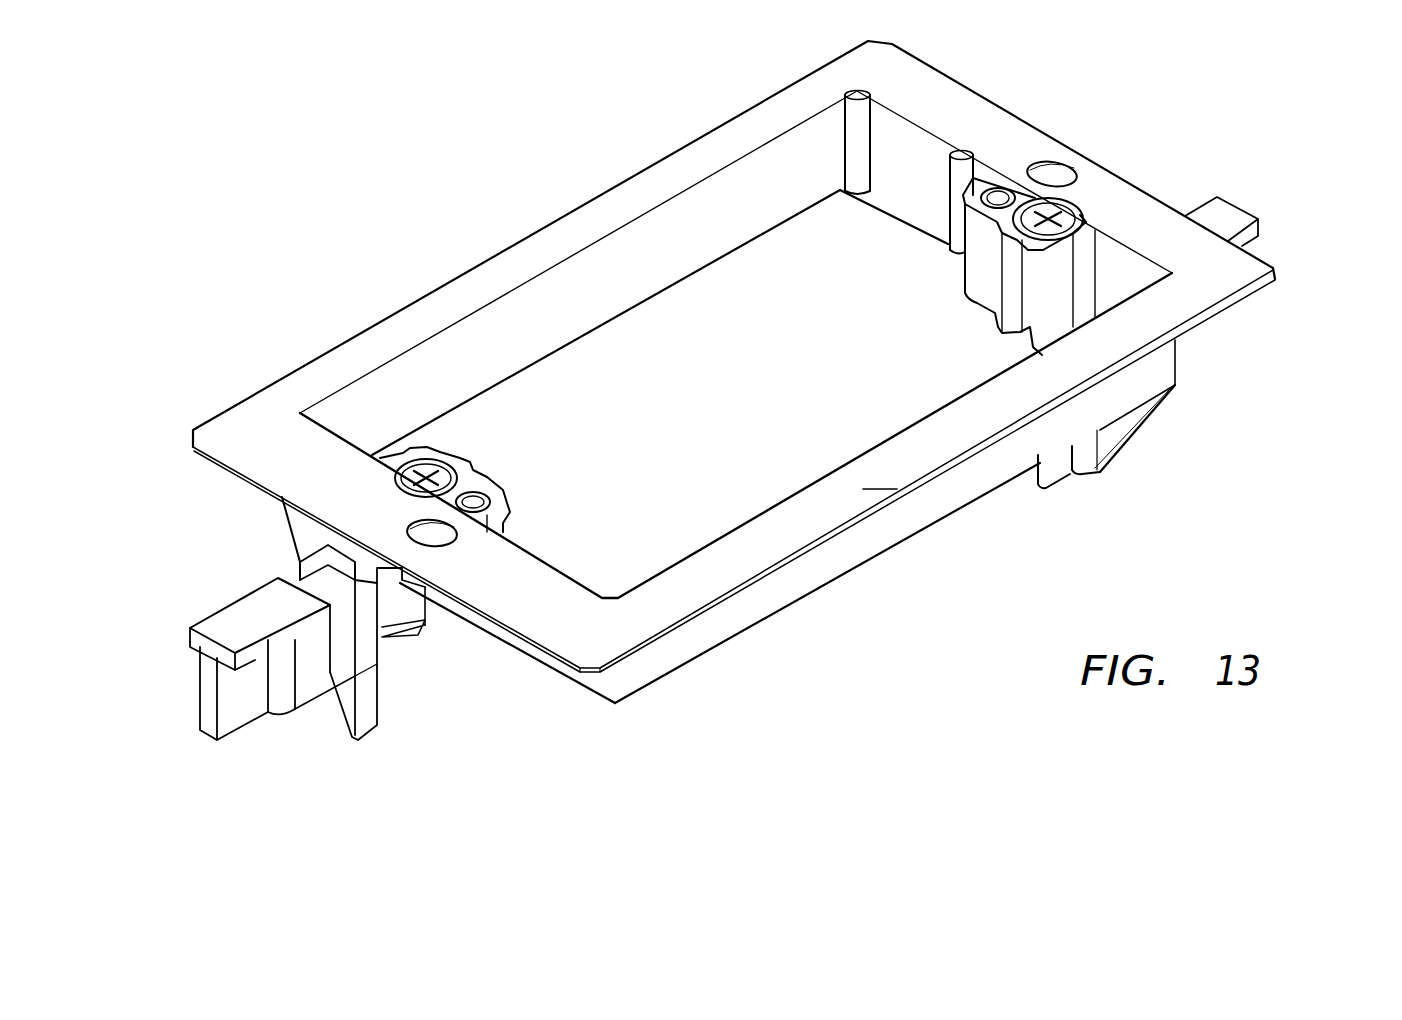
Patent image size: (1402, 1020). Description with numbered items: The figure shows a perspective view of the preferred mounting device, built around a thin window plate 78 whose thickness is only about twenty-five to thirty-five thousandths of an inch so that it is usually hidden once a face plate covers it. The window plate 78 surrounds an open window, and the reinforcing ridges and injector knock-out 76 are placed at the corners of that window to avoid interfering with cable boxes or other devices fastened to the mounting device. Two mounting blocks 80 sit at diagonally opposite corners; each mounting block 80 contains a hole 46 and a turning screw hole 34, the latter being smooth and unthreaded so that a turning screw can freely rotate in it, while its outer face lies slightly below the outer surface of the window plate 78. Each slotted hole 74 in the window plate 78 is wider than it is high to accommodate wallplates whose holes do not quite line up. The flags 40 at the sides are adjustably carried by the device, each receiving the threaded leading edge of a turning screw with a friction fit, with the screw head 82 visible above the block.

The turning screw hole 34 is at (440, 468).
The flag 40 is at (1240, 207).
The hole 46 is at (998, 205).
The slotted hole 74 is at (1044, 162).
The injector knock-out 76 is at (870, 196).
The window plate 78 is at (734, 372).
The mounting block 80 is at (973, 308).
The screw 82 is at (972, 195).